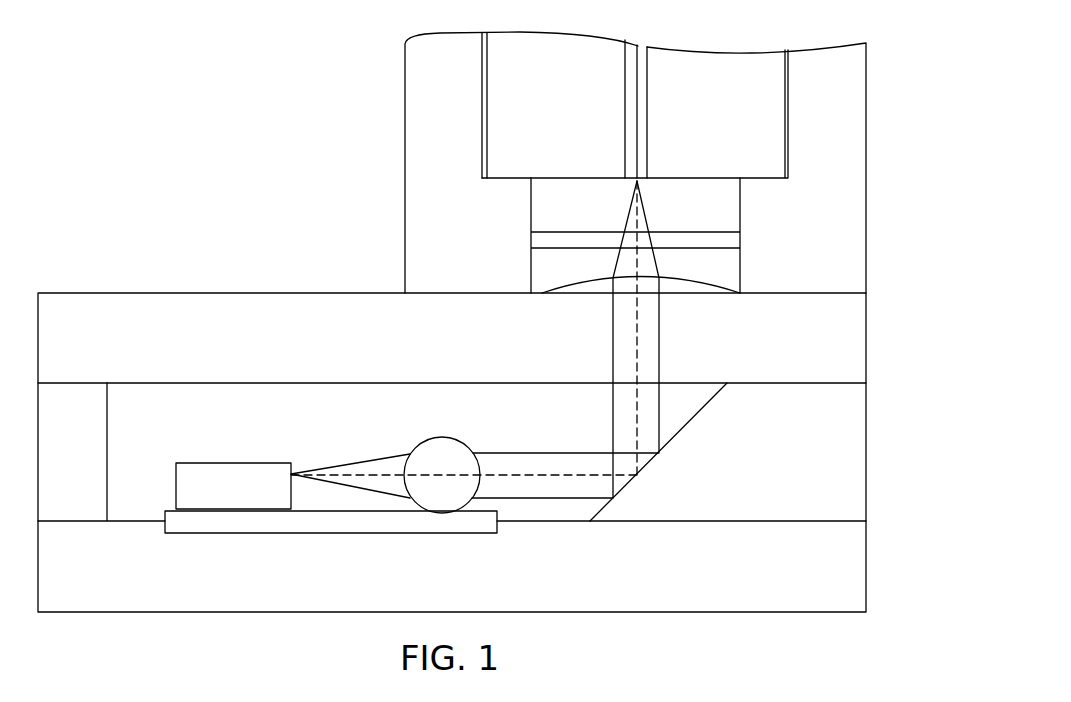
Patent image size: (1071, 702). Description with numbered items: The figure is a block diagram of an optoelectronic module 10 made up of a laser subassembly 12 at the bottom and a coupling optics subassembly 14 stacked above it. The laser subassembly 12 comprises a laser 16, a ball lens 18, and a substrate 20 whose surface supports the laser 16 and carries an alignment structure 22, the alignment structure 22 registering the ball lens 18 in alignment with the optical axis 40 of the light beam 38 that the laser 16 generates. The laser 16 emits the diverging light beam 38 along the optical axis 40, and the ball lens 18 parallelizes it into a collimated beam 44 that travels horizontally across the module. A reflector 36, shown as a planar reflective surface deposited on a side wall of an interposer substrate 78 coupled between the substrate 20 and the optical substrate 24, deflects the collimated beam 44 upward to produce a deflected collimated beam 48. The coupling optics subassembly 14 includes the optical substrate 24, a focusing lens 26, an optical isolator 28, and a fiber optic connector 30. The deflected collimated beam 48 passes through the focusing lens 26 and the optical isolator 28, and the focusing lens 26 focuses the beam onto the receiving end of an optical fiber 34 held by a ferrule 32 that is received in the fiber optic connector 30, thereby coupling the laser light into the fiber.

The optoelectronic module 10 is at (128, 77).
The laser subassembly 12 is at (242, 420).
The coupling optics subassembly 14 is at (351, 188).
The laser 16 is at (199, 462).
The ball lens 18 is at (442, 437).
The substrate 20 is at (866, 565).
The alignment structure 22 is at (331, 533).
The optical substrate 24 is at (866, 338).
The focusing lens 26 is at (582, 295).
The optical isolator 28 is at (531, 240).
The fiber optic connector 30 is at (866, 183).
The ferrule 32 is at (543, 33).
The optical fiber 34 is at (638, 44).
The reflector 36 is at (683, 432).
The light beam 38 is at (393, 454).
The optical axis 40 is at (337, 473).
The collimated beam 44 is at (545, 453).
The deflected collimated beam 48 is at (612, 408).
The interposer substrate 78 is at (866, 454).